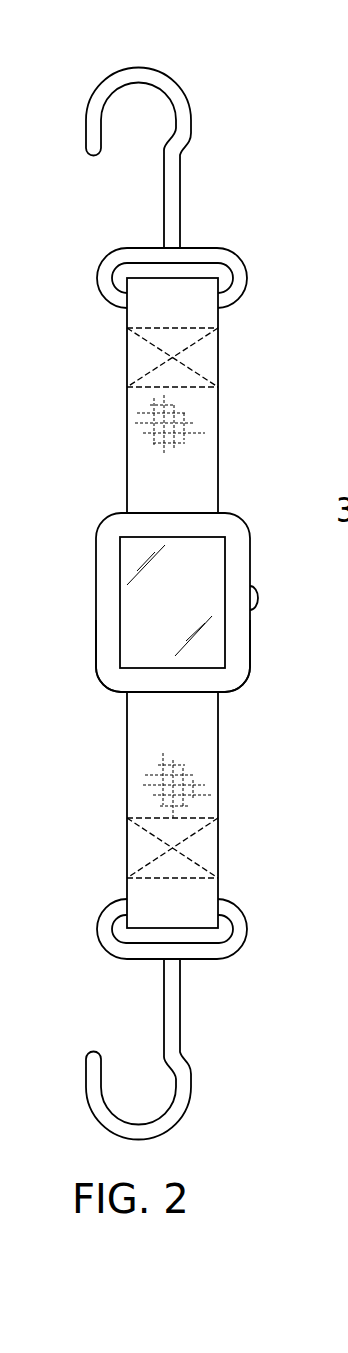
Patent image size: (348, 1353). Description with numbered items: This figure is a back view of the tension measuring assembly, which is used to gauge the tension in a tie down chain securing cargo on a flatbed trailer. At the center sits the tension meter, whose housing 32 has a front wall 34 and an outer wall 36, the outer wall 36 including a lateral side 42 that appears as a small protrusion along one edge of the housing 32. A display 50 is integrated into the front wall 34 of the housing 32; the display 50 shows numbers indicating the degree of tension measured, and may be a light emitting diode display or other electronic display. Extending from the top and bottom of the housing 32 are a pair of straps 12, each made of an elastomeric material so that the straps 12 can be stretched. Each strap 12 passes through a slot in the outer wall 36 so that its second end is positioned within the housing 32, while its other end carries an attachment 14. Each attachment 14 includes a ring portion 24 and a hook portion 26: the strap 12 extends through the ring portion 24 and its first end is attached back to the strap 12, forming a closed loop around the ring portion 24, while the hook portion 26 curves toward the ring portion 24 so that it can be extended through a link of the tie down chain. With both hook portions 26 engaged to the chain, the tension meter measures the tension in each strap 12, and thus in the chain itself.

The strap 12 is at (218, 80).
The attachment 14 is at (226, 1094).
The ring portion 24 is at (273, 269).
The hook portion 26 is at (127, 50).
The housing 32 is at (107, 515).
The front wall 34 is at (108, 642).
The outer wall 36 is at (272, 667).
The lateral side 42 is at (250, 568).
The display 50 is at (120, 590).